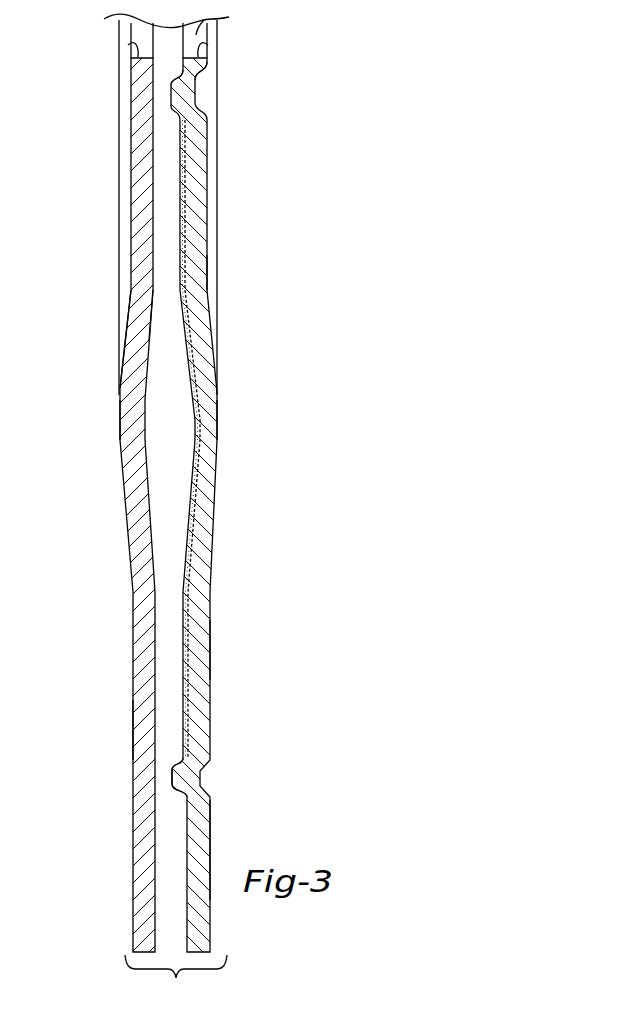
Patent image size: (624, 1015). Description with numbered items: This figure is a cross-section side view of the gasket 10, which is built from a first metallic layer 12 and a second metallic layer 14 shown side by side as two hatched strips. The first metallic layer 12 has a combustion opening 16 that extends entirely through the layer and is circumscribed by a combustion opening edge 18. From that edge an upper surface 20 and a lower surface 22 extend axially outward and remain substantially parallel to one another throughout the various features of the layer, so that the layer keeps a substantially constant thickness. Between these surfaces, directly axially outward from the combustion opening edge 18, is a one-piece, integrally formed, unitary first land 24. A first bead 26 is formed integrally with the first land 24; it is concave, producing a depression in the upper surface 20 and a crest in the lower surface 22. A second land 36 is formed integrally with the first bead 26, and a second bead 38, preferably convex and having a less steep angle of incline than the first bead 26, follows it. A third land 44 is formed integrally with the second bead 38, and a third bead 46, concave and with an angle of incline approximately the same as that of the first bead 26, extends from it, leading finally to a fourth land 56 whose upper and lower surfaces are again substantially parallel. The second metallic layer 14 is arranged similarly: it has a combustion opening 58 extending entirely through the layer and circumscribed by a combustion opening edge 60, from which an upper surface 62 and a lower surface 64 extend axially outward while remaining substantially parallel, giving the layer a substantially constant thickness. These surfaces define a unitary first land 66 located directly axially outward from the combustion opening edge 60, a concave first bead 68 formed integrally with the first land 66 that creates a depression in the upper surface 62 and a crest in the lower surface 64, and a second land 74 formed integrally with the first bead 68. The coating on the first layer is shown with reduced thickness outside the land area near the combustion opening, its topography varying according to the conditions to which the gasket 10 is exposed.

The gasket 10 is at (176, 978).
The first metallic layer 12 is at (202, 228).
The second metallic layer 14 is at (138, 219).
The combustion opening 16 is at (229, 17).
The combustion opening edge 18 is at (208, 45).
The upper surface 20 is at (208, 148).
The lower surface 22 is at (186, 173).
The first land 24 is at (218, 73).
The first bead 26 is at (211, 100).
The second land 36 is at (224, 273).
The second bead 38 is at (232, 437).
The third land 44 is at (221, 648).
The third bead 46 is at (214, 774).
The fourth land 56 is at (220, 848).
The combustion opening 58 is at (104, 19).
The combustion opening edge 60 is at (128, 45).
The upper surface 62 is at (155, 297).
The lower surface 64 is at (127, 336).
The first land 66 is at (122, 128).
The first bead 68 is at (109, 428).
The second land 74 is at (121, 730).